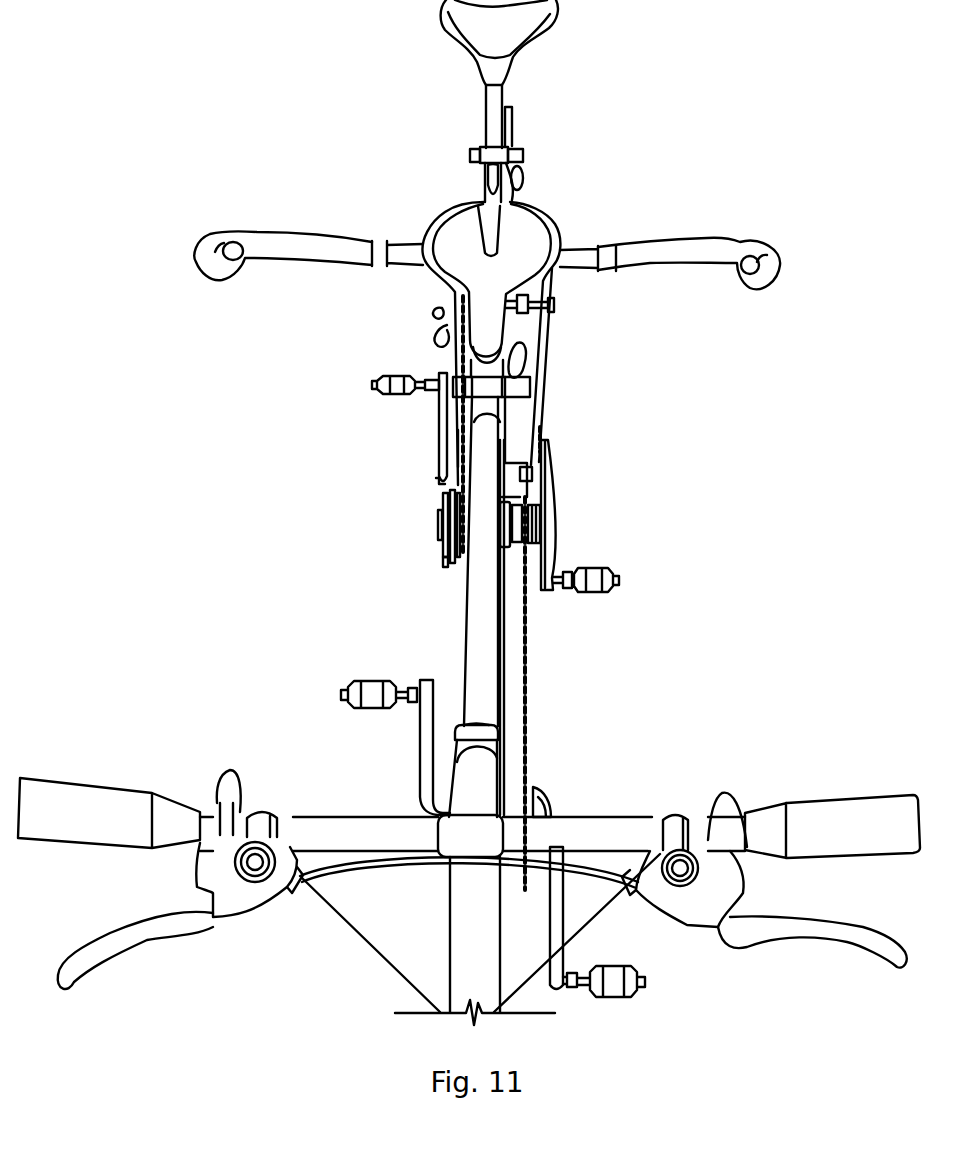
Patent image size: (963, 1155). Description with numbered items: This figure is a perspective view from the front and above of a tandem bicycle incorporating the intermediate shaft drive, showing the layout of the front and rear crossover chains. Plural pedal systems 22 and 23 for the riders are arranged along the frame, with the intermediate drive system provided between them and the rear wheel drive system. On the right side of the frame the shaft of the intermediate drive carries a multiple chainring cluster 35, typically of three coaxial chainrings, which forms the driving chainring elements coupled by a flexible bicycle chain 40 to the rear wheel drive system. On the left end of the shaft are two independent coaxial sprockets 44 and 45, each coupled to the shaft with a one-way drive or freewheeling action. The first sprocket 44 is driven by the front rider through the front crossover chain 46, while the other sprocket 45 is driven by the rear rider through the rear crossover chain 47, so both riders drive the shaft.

The pedal system 22 is at (420, 763).
The pedal system 23 is at (440, 462).
The multiple chainring cluster 35 is at (440, 540).
The chain 40 is at (470, 446).
The first sprocket 44 is at (543, 527).
The sprocket 45 is at (530, 500).
The front crossover chain 46 is at (534, 727).
The rear crossover chain 47 is at (542, 450).